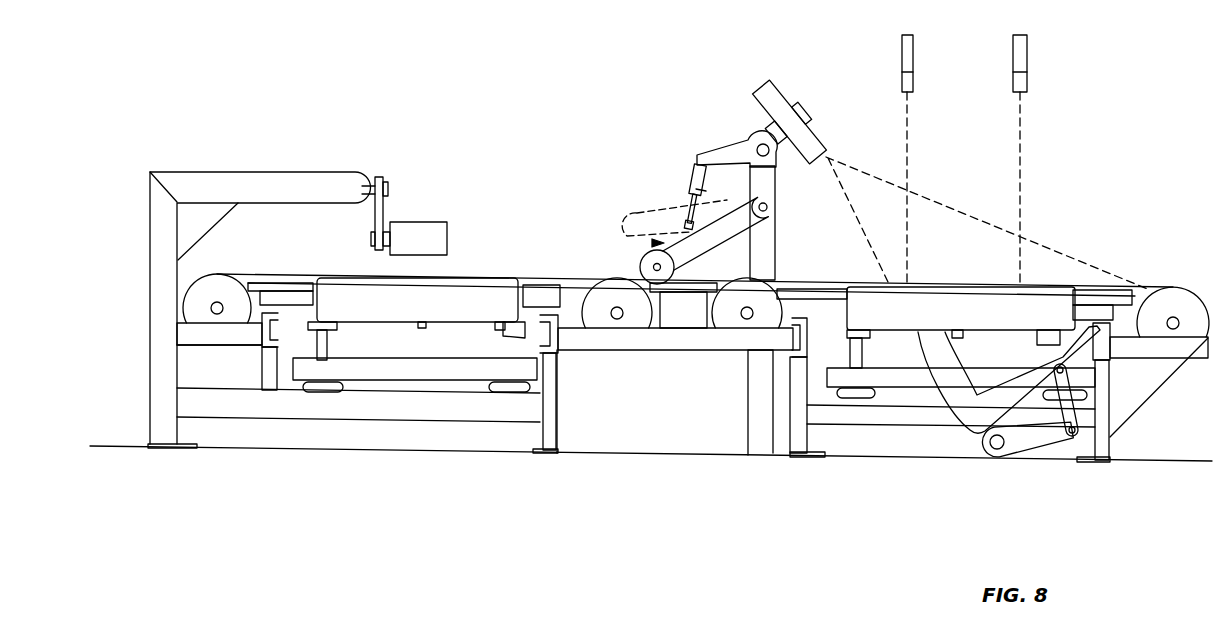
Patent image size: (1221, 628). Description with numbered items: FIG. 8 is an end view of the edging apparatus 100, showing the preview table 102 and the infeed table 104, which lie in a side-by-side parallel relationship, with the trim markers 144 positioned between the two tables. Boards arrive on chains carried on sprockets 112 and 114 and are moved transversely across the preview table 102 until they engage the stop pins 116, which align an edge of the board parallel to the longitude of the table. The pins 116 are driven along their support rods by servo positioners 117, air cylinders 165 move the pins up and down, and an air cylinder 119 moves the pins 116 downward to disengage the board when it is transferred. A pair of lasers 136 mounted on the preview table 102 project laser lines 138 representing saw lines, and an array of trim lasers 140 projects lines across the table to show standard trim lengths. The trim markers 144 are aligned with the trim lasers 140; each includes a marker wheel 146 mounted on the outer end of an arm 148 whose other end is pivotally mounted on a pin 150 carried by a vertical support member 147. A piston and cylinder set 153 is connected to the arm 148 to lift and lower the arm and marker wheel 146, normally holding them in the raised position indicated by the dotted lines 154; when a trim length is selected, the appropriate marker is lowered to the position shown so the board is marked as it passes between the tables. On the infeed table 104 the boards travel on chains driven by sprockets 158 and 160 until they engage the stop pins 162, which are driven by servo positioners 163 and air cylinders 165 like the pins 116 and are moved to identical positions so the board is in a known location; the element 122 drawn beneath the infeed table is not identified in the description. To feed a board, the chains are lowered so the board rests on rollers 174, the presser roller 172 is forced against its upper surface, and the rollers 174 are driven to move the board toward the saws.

The edging apparatus 100 is at (98, 171).
The preview table 102 is at (1103, 491).
The infeed table 104 is at (394, 466).
The sprocket 112 is at (1173, 297).
The sprocket 114 is at (733, 323).
The stop pins 116 is at (850, 283).
The servo positioners 117 is at (1022, 336).
The air cylinder 119 is at (848, 348).
The tray 122 is at (900, 316).
The lasers 136 is at (913, 55).
The laser lines 138 is at (907, 170).
The trim lasers 140 is at (767, 86).
The trim markers 144 is at (655, 243).
The marker wheel 146 is at (645, 265).
The vertical support member 147 is at (765, 262).
The arm 148 is at (733, 232).
The pin 150 is at (770, 206).
The piston and cylinder set 153 is at (688, 188).
The dotted lines 154 is at (637, 212).
The sprocket 158 is at (623, 322).
The sprocket 160 is at (195, 298).
The stop pins 162 is at (322, 275).
The servo positioners 163 is at (495, 333).
The air cylinders 165 is at (312, 346).
The presser roller 172 is at (420, 232).
The rollers 174 is at (375, 312).